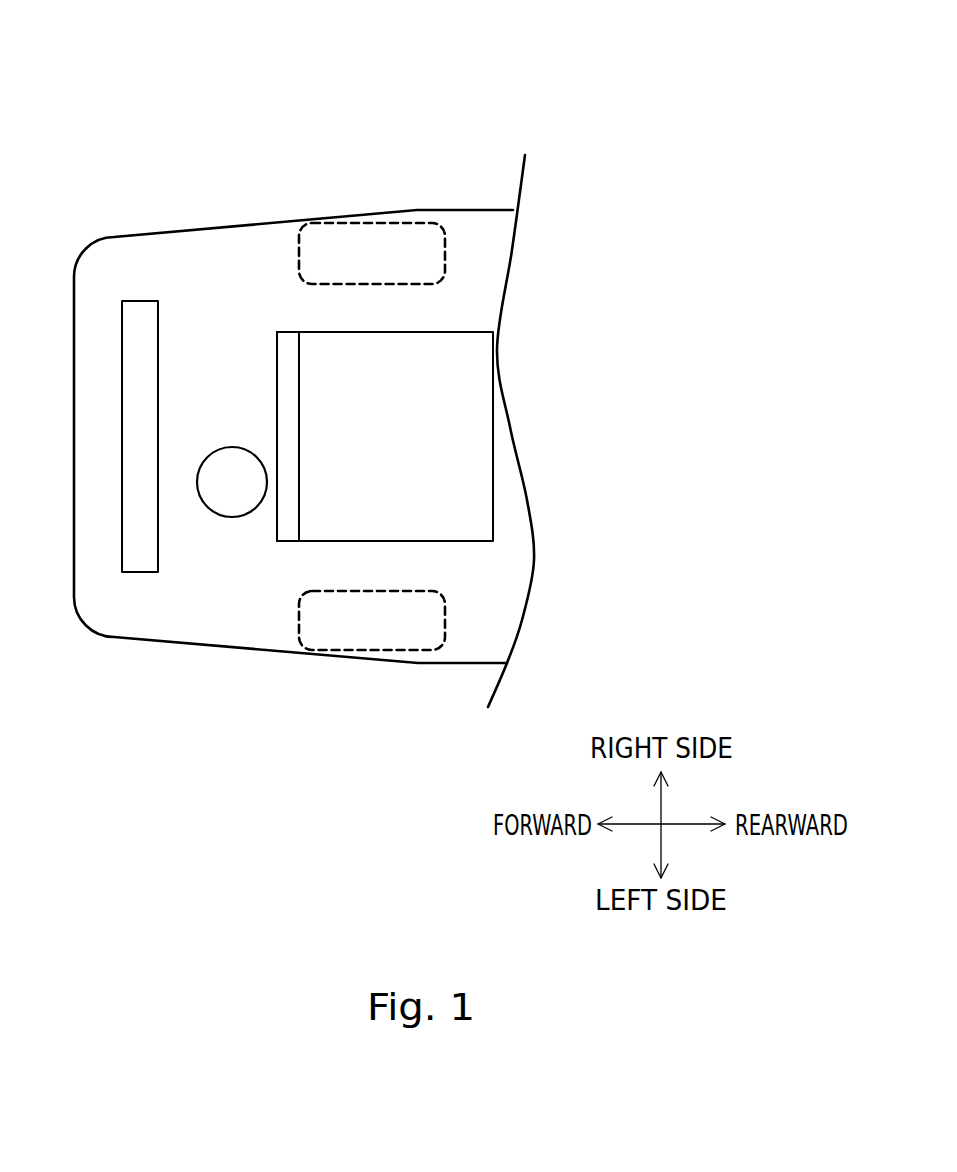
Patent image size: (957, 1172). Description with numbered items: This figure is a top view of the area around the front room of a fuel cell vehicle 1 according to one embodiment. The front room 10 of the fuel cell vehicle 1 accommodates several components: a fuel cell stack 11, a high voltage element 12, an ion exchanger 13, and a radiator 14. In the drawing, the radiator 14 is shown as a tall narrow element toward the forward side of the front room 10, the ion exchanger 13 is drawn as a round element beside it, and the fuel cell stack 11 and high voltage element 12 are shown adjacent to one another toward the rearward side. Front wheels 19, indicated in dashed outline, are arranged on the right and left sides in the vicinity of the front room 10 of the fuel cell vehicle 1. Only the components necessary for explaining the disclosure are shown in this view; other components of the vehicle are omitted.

The fuel cell vehicle 1 is at (367, 401).
The front room 10 is at (220, 258).
The fuel cell stack 11 is at (290, 535).
The high voltage element 12 is at (473, 443).
The ion exchanger 13 is at (223, 517).
The radiator 14 is at (140, 572).
The front wheels 19 is at (447, 243).